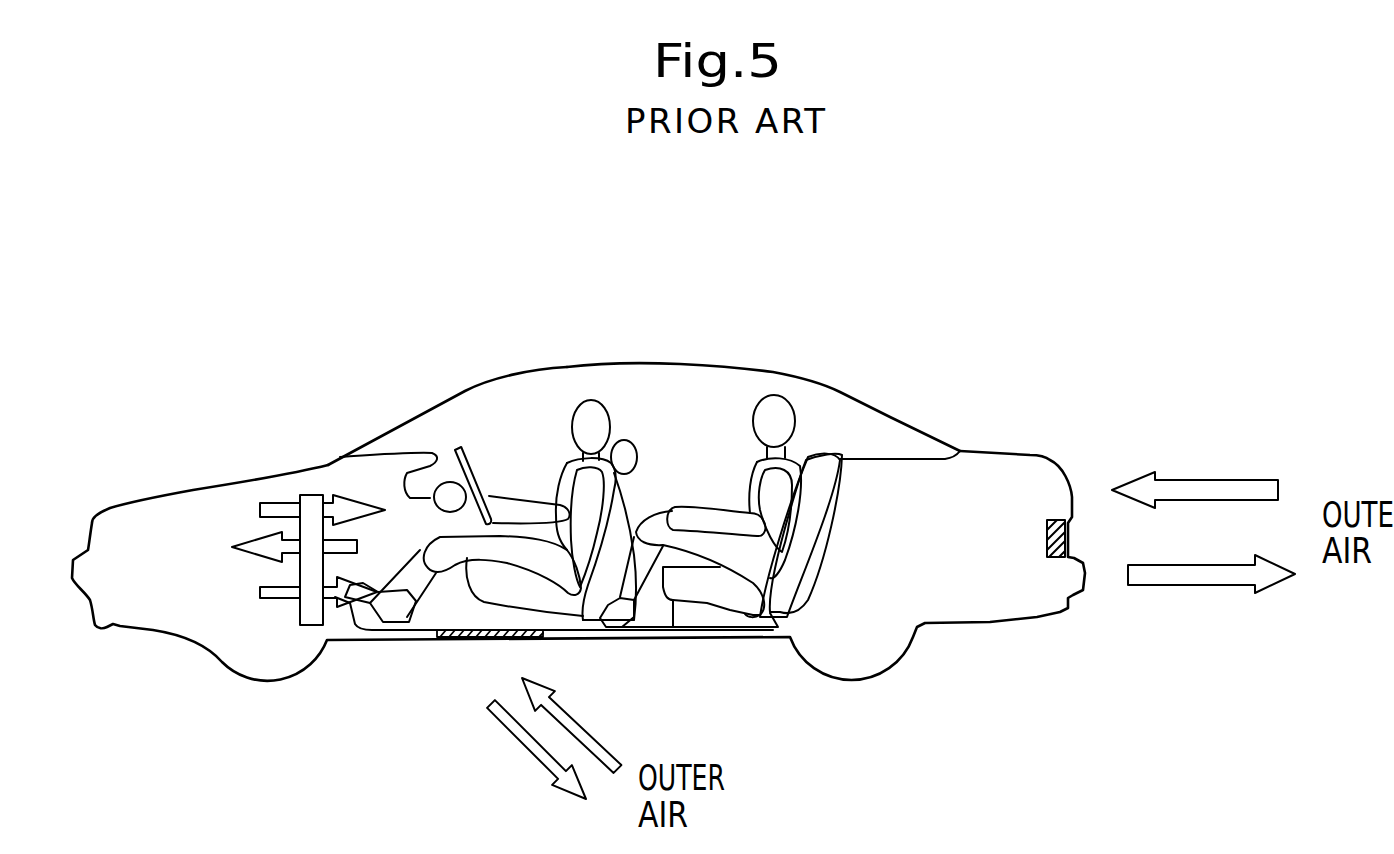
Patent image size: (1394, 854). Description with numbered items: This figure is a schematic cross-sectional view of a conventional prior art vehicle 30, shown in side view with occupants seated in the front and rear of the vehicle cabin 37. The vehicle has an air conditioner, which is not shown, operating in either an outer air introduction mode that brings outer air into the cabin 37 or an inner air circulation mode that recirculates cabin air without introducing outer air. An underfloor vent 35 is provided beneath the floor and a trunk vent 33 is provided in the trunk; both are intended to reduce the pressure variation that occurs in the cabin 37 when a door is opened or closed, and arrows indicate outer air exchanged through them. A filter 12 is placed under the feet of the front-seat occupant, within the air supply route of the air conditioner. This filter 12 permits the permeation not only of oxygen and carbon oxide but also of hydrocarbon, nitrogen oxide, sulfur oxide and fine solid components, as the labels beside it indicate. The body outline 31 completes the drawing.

The filter 12 is at (308, 498).
The vehicle 30 is at (753, 344).
The vehicle body 31 is at (627, 362).
The trunk vent 33 is at (1047, 538).
The underfloor vent 35 is at (482, 640).
The vehicle cabin 37 is at (500, 392).